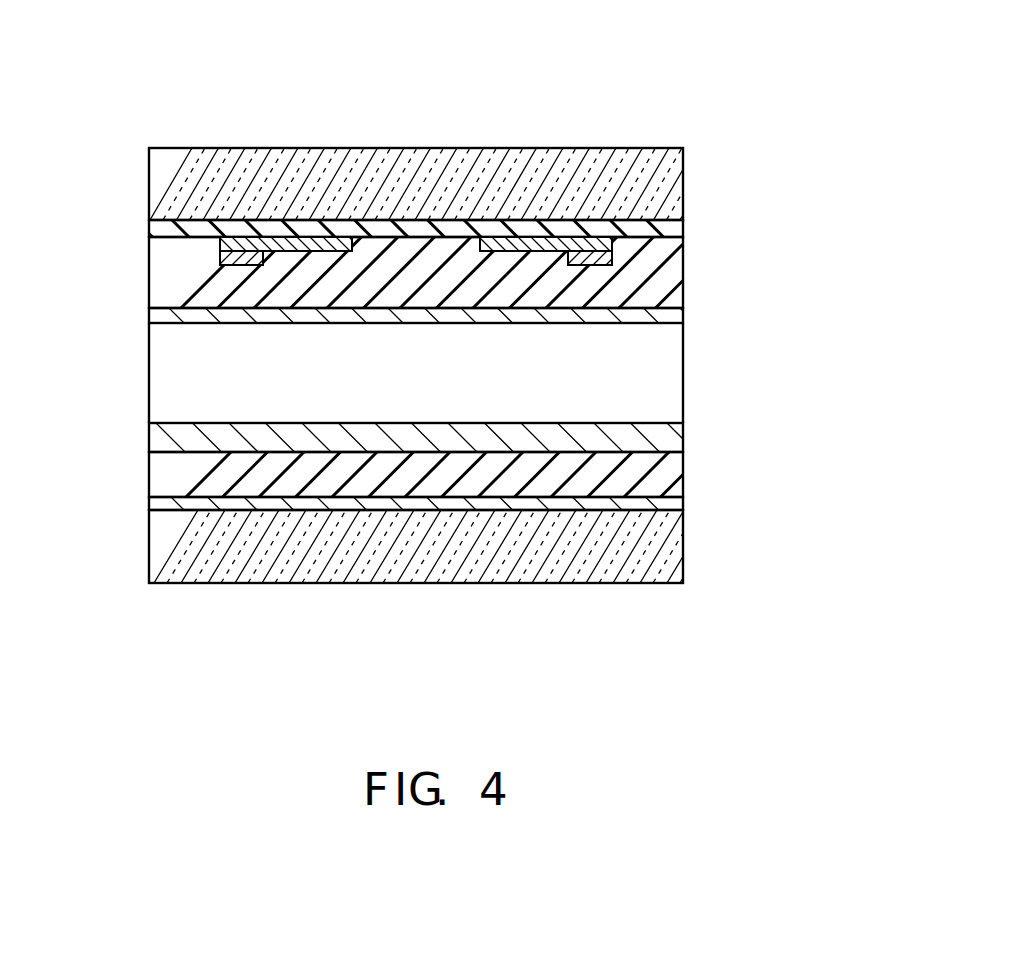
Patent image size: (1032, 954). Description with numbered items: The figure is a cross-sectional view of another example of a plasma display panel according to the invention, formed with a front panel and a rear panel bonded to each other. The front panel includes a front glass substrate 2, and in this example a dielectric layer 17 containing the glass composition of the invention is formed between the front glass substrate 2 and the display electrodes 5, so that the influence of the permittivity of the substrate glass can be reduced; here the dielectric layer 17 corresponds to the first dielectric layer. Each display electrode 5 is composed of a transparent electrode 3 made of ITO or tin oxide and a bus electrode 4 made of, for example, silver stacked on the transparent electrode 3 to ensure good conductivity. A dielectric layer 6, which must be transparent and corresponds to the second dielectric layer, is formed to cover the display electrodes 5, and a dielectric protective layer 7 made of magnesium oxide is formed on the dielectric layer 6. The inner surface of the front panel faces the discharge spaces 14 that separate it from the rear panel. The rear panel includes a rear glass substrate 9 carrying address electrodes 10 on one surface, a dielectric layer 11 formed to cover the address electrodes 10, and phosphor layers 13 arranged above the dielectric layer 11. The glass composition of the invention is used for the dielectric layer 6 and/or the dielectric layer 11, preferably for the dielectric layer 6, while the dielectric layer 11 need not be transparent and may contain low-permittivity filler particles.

The front glass substrate 2 is at (663, 183).
The dielectric layer 17 is at (673, 228).
The dielectric layer 6 is at (665, 277).
The dielectric protective layer 7 is at (667, 316).
The display electrode 5 is at (421, 136).
The transparent electrode 3 is at (312, 248).
The bus electrode 4 is at (255, 260).
The discharge space 14 is at (197, 388).
The phosphor layer 13 is at (658, 442).
The dielectric layer 11 is at (658, 477).
The address electrode 10 is at (680, 503).
The rear glass substrate 9 is at (562, 567).